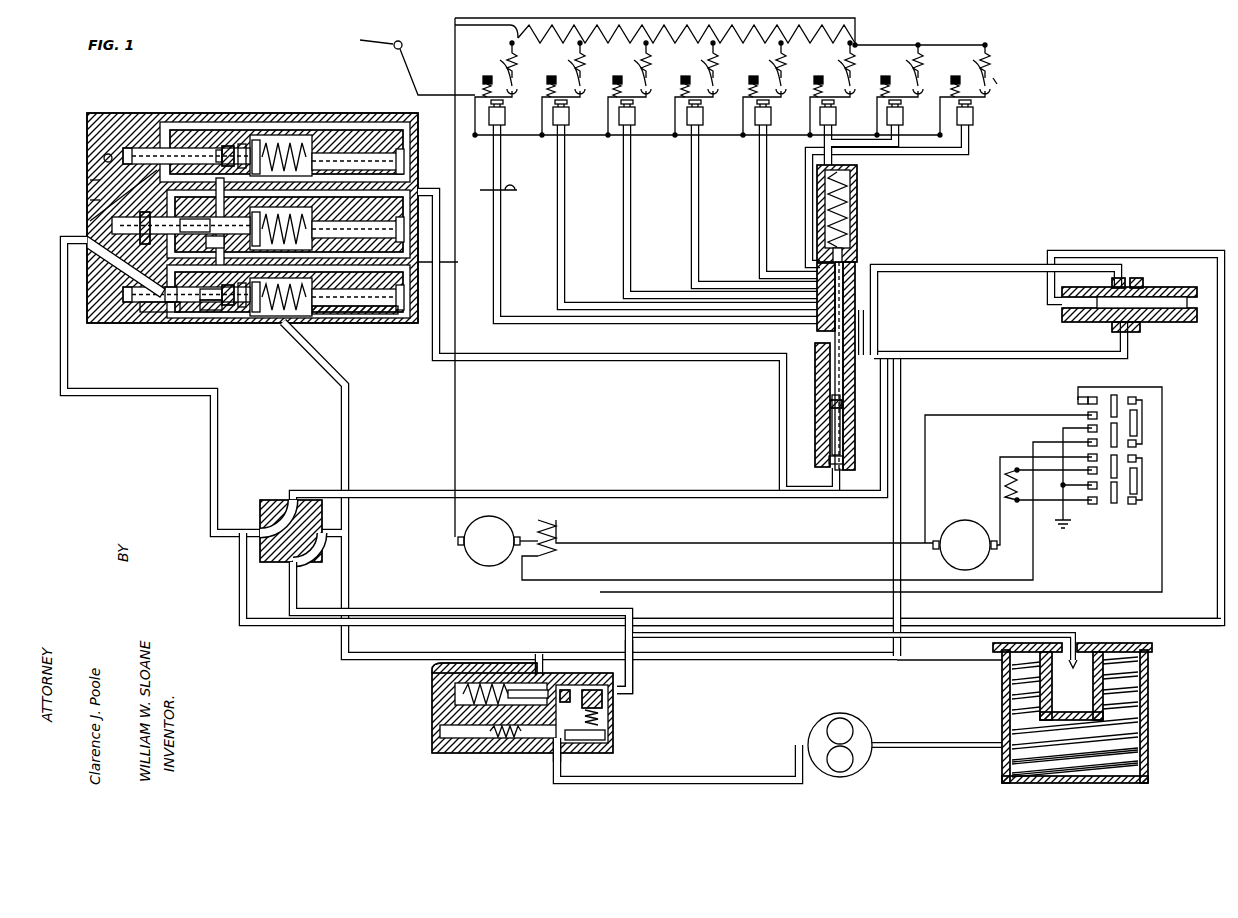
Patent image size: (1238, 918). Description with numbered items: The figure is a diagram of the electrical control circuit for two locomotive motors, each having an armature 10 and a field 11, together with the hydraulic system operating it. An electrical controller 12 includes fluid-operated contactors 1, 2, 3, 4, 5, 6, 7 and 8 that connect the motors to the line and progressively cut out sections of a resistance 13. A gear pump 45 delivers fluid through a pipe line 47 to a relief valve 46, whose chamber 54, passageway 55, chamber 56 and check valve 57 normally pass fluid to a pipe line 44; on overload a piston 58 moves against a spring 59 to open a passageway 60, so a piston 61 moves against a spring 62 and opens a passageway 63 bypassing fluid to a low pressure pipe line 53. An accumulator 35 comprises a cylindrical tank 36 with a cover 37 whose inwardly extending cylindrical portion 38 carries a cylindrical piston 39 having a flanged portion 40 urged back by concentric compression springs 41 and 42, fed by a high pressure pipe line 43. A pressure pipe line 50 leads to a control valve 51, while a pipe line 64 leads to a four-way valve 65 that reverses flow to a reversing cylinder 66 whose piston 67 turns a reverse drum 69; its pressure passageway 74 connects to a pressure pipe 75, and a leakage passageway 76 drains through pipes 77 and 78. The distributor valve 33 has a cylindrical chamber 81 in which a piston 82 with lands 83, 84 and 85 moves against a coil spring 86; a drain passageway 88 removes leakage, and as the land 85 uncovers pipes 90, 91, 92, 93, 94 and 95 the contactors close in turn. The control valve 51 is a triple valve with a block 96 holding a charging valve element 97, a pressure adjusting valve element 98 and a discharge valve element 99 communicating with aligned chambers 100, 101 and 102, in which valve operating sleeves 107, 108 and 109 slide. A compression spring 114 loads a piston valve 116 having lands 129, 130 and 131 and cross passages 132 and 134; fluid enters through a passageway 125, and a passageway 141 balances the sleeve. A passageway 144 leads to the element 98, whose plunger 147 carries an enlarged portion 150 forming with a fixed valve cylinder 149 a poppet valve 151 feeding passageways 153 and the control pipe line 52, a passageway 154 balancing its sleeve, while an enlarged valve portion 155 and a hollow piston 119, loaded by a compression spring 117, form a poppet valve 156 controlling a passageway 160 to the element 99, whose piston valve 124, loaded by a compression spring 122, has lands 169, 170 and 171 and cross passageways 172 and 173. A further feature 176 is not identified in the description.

The fluid-operated contactor 1 is at (495, 89).
The fluid-operated contactor 2 is at (562, 89).
The fluid-operated contactor 3 is at (628, 89).
The fluid-operated contactor 4 is at (695, 89).
The fluid-operated contactor 5 is at (763, 89).
The fluid-operated contactor 6 is at (831, 89).
The fluid-operated contactor 7 is at (899, 91).
The fluid-operated contactor 8 is at (964, 91).
The armature 10 is at (470, 556).
The field 11 is at (566, 540).
The electrical controller 12 is at (1004, 86).
The resistance 13 is at (455, 24).
The distributor valve 33 is at (856, 262).
The accumulator 35 is at (995, 697).
The cylindrical tank 36 is at (1148, 713).
The cover 37 is at (1150, 646).
The inwardly extending cylindrical portion 38 is at (1110, 698).
The cylindrical piston 39 is at (1040, 702).
The flanged portion 40 is at (995, 650).
The compression spring 41 is at (1012, 770).
The compression spring 42 is at (1012, 758).
The high pressure pipe line 43 is at (834, 630).
The pipe line 44 is at (634, 688).
The fluid pump 45 is at (817, 726).
The relief valve 46 is at (431, 757).
The pipe line 47 is at (738, 782).
The pressure pipe line 50 is at (259, 627).
The control valve 51 is at (98, 105).
The control pipe line 52 is at (546, 361).
The low pressure pipe line 53 is at (350, 455).
The chamber 54 is at (561, 760).
The passageway 55 is at (605, 716).
The chamber 56 is at (586, 688).
The check valve 57 is at (610, 712).
The piston 58 is at (432, 670).
The spring 59 is at (440, 708).
The passageway 60 is at (545, 662).
The piston 61 is at (612, 742).
The spring 62 is at (495, 740).
The passageway 63 is at (508, 705).
The pipe line 64 is at (258, 500).
The four-way valve 65 is at (265, 555).
The reversing cylinder 66 is at (1180, 287).
The piston 67 is at (1175, 312).
The reverse drum 69 is at (1121, 519).
The pressure passageway 74 is at (1118, 278).
The pressure pipe 75 is at (986, 268).
The passageway 76 is at (1120, 332).
The pipe 77 is at (1012, 359).
The pipe 78 is at (893, 525).
The cylindrical chamber 81 is at (830, 403).
The piston 82 is at (815, 440).
The land 83 is at (829, 461).
The land 84 is at (832, 436).
The land 85 is at (817, 332).
The coil spring 86 is at (857, 196).
The drain passageway 88 is at (862, 318).
The pipe 90 is at (690, 324).
The pipe 91 is at (612, 306).
The pipe 92 is at (680, 295).
The pipe 93 is at (746, 285).
The pipe 94 is at (760, 264).
The pipe 95 is at (809, 256).
The block 96 is at (87, 128).
The charging valve element 97 is at (128, 146).
The pressure adjusting valve element 98 is at (92, 220).
The discharge valve element 99 is at (128, 302).
The cylindrical chamber 100 is at (270, 140).
The cylindrical chamber 101 is at (285, 214).
The cylindrical chamber 102 is at (278, 316).
The valve operating sleeve 107 is at (345, 134).
The valve operating sleeve 108 is at (345, 221).
The valve operating sleeve 109 is at (345, 289).
The compression spring 114 is at (300, 130).
The piston valve 116 is at (212, 152).
The compression spring 117 is at (252, 286).
The hollow piston 119 is at (200, 214).
The compression spring 122 is at (300, 320).
The piston valve 124 is at (205, 303).
The passageway 125 is at (87, 240).
The land 129 is at (158, 148).
The land 130 is at (222, 146).
The land 131 is at (258, 140).
The cross passages 132 is at (222, 150).
The cross passages 134 is at (242, 144).
The passageway 141 is at (330, 124).
The passageway 144 is at (95, 182).
The plunger 147 is at (170, 236).
The fixed valve cylinder 149 is at (250, 212).
The enlarged portion 150 is at (140, 230).
The poppet valve 151 is at (95, 202).
The passageways 153 is at (108, 165).
The passageway 154 is at (418, 160).
The enlarged valve portion 155 is at (205, 232).
The poppet valve 156 is at (215, 250).
The passageway 160 is at (210, 310).
The land 169 is at (150, 312).
The land 170 is at (175, 302).
The land 171 is at (244, 308).
The cross passageways 172 is at (165, 303).
The cross passageways 173 is at (228, 306).
The port 176 is at (451, 262).